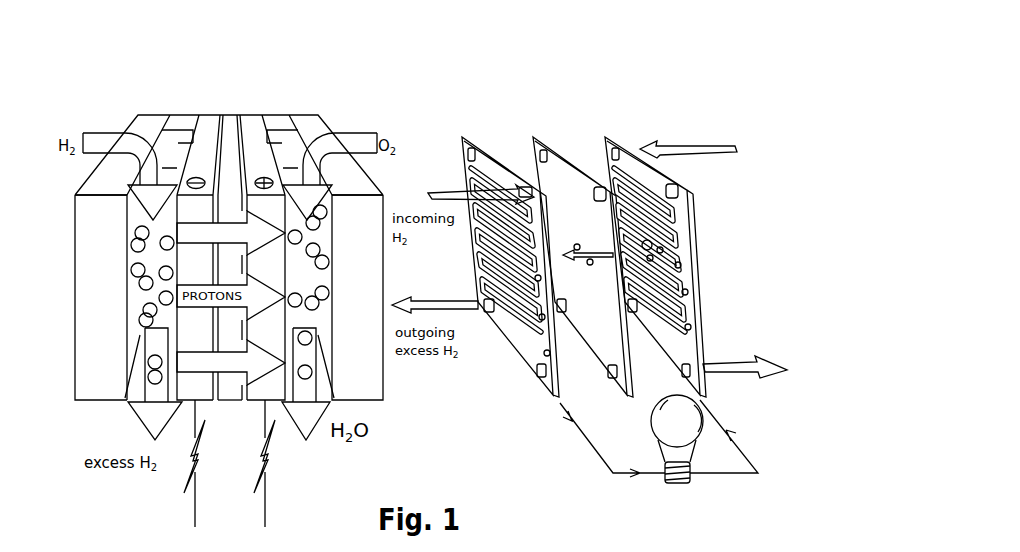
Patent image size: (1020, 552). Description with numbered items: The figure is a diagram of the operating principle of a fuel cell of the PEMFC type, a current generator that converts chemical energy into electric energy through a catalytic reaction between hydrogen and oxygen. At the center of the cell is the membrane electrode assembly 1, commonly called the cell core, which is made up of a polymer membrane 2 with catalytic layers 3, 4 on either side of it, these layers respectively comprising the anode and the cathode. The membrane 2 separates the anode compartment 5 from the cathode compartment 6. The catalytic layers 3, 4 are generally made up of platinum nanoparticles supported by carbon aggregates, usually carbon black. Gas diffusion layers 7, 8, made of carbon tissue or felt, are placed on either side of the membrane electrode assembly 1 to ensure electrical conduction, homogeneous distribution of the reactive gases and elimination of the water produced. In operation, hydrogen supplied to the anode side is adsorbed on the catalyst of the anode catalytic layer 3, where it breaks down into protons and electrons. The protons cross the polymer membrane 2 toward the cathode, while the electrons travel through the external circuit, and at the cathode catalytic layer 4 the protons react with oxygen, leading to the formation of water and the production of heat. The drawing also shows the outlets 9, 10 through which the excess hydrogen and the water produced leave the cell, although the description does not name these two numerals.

The membrane electrode assembly 1 is at (258, 43).
The polymer membrane 2 is at (228, 115).
The catalytic layer 3 is at (220, 113).
The catalytic layer 4 is at (238, 113).
The anode compartment 5 is at (218, 110).
The cathode compartment 6 is at (318, 110).
The gas diffusion layer 7 is at (187, 262).
The gas diffusion layer 8 is at (273, 275).
The excess hydrogen outlet 9 is at (140, 377).
The water outlet 10 is at (320, 378).